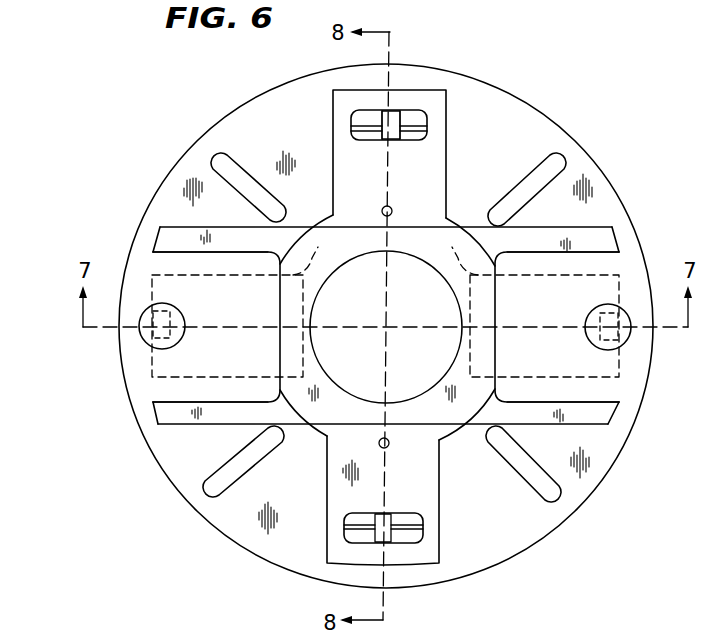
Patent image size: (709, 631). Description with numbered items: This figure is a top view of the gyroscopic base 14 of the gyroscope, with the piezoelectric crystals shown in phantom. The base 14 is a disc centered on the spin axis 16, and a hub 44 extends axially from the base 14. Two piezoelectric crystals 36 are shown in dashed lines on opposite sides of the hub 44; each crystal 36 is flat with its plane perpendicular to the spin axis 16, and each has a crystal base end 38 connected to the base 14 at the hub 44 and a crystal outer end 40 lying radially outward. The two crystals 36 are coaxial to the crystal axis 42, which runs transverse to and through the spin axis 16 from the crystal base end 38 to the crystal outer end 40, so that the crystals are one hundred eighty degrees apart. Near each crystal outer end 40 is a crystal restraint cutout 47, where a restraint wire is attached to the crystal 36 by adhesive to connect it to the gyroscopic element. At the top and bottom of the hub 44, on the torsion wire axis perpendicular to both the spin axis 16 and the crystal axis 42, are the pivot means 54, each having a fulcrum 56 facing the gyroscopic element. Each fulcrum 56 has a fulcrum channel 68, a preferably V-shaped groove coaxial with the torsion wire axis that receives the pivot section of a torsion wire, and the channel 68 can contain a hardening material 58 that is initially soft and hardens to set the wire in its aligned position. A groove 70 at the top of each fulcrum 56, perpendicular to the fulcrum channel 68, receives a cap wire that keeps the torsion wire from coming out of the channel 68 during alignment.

The gyroscopic base 14 is at (588, 120).
The spin axis 16 is at (388, 326).
The piezoelectric crystal 36 is at (172, 292).
The crystal base end 38 is at (385, 253).
The crystal outer end 40 is at (150, 366).
The crystal axis 42 is at (223, 328).
The hub 44 is at (445, 428).
The crystal restraint cutout 47 is at (140, 340).
The pivot means 54 is at (408, 113).
The fulcrum 56 is at (397, 123).
The hardening material 58 is at (396, 137).
The fulcrum channel 68 is at (381, 137).
The groove 70 is at (352, 127).